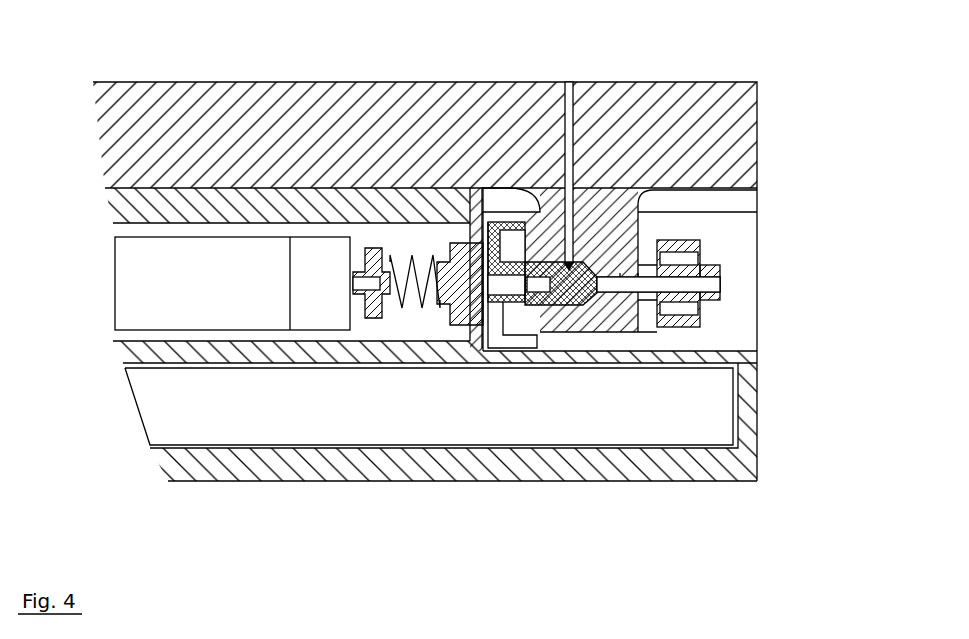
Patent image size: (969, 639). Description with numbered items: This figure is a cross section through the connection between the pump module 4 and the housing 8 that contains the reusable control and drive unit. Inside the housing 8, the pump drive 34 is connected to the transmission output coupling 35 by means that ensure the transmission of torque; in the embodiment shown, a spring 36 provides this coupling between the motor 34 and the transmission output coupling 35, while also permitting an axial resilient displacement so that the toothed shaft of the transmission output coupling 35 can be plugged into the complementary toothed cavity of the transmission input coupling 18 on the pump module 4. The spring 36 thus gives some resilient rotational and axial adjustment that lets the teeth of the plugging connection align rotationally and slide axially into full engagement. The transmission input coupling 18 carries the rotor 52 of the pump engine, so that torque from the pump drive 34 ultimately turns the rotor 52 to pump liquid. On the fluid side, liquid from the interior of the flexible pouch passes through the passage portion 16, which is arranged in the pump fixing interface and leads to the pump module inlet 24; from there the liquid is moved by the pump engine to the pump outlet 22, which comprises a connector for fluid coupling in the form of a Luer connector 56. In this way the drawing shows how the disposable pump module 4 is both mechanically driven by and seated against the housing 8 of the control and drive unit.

The pump module 4 is at (547, 233).
The housing 8 is at (605, 503).
The passage portion 16 is at (583, 82).
The transmission input coupling 18 is at (513, 300).
The pump outlet 22 is at (737, 284).
The pump module inlet 24 is at (598, 298).
The pump drive 34 is at (226, 298).
The transmission output coupling 35 is at (468, 318).
The spring 36 is at (406, 302).
The rotor 52 is at (531, 300).
The Luer connector 56 is at (695, 242).